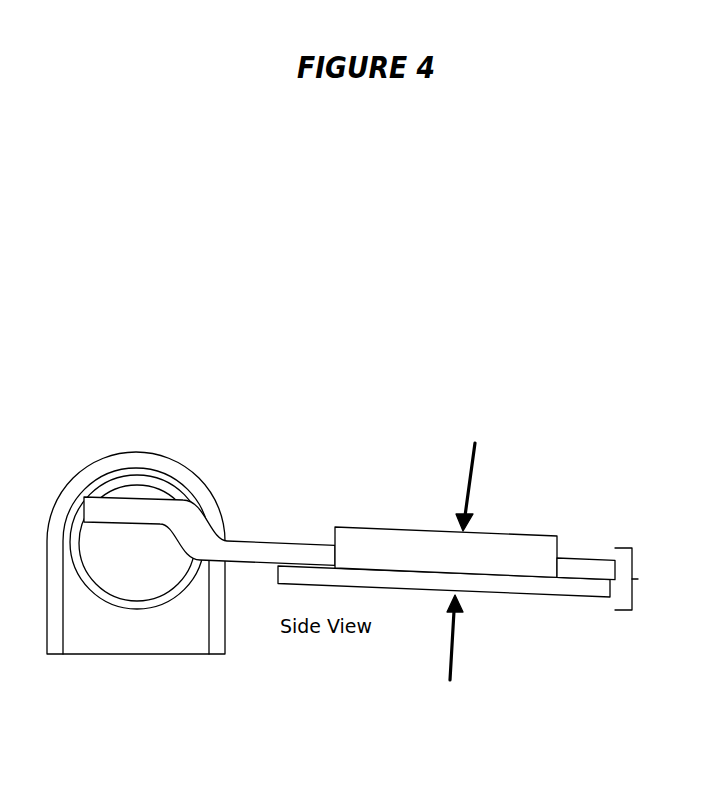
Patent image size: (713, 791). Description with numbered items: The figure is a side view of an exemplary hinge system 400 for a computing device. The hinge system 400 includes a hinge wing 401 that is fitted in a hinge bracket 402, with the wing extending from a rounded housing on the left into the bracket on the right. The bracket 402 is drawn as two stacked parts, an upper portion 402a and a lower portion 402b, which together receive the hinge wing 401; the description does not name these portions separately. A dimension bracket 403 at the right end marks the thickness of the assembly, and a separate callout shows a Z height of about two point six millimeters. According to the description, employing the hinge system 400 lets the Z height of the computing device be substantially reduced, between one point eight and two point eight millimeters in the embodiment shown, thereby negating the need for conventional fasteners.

The hinge system 400 is at (363, 486).
The hinge wing 401 is at (248, 545).
The hinge bracket 402 is at (459, 544).
The sensor upper body 402a is at (422, 532).
The sensor lower substrate 402b is at (557, 598).
The thickness dimension 403 is at (647, 579).